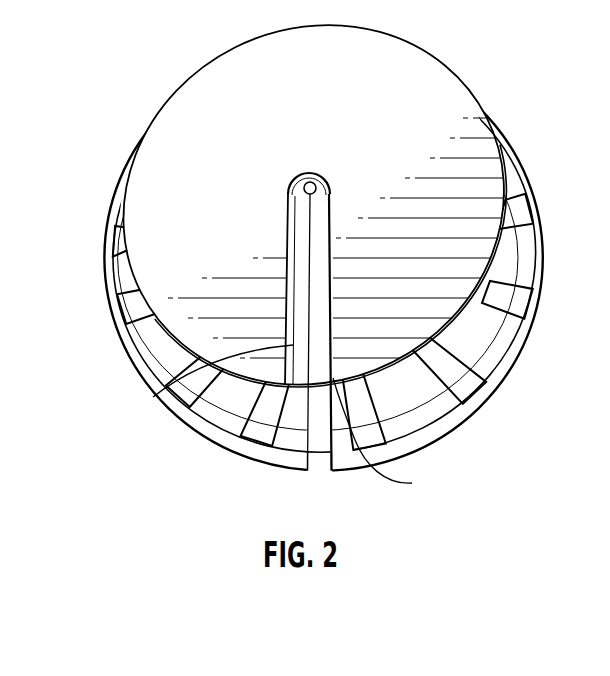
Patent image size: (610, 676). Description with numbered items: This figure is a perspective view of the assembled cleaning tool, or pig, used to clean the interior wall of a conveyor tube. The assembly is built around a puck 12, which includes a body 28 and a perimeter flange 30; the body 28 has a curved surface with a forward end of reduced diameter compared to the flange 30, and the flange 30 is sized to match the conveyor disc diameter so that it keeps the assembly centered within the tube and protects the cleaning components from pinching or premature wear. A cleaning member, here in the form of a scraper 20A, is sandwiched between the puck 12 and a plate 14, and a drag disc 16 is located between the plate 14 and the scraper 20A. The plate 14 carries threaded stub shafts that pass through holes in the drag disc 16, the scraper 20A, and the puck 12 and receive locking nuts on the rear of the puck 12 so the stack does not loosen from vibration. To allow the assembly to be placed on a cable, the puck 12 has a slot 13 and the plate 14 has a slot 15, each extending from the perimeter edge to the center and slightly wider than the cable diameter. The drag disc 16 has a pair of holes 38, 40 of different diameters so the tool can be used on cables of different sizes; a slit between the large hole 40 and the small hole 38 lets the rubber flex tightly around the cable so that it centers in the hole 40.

The puck 12 is at (205, 432).
The slot 13 is at (323, 455).
The plate 14 is at (409, 50).
The slot 15 is at (365, 349).
The drag disc 16 is at (197, 378).
The scraper 20A is at (530, 212).
The body 28 is at (505, 245).
The perimeter flange 30 is at (532, 295).
The small hole 38 is at (312, 172).
The large hole 40 is at (302, 189).